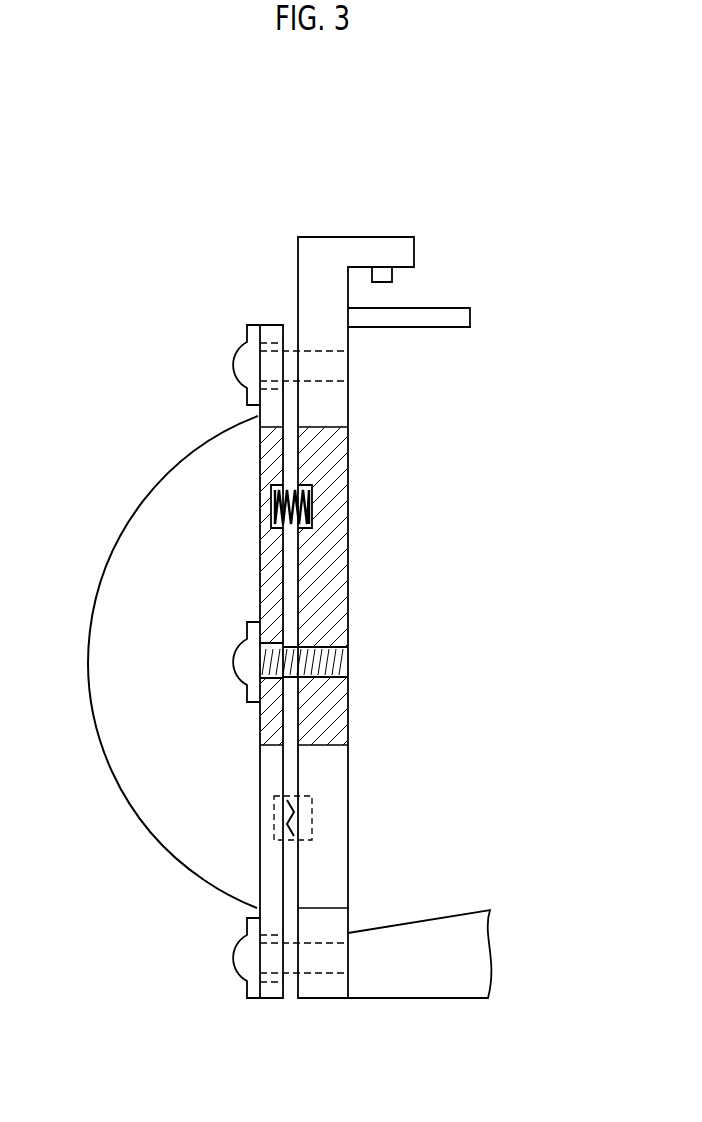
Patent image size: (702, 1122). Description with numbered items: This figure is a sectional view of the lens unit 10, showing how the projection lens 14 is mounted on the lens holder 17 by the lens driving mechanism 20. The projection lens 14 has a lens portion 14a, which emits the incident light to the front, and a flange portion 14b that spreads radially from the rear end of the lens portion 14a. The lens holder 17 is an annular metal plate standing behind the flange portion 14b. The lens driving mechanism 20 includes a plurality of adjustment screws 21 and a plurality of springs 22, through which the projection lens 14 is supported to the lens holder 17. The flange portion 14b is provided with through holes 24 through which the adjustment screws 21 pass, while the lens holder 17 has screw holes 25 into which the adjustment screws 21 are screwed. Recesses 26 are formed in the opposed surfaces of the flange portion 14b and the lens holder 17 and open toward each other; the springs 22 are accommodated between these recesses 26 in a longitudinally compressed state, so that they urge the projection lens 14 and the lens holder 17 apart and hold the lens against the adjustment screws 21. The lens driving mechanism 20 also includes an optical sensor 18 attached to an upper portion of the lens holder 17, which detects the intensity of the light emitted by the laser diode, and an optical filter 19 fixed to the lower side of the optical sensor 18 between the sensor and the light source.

The lens unit 10 is at (136, 255).
The projection lens 14 is at (166, 426).
The lens portion 14a is at (133, 515).
The flange portion 14b is at (257, 880).
The lens holder 17 is at (297, 272).
The optical sensor 18 is at (393, 278).
The optical filter 19 is at (471, 318).
The lens driving mechanism 20 is at (378, 423).
The adjustment screw 21 is at (240, 346).
The spring 22 is at (270, 520).
The through hole 24 is at (262, 655).
The screw hole 25 is at (348, 660).
The recess 26 is at (279, 484).